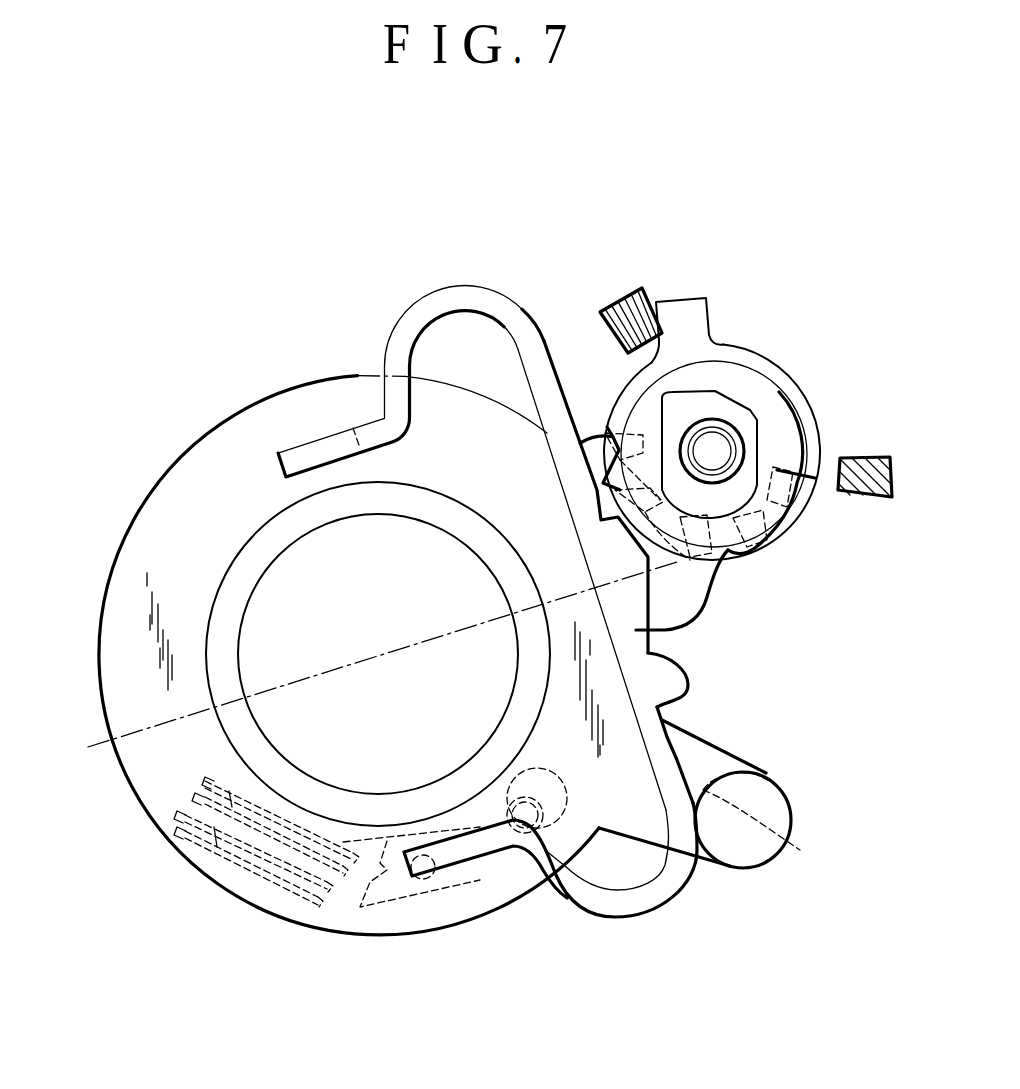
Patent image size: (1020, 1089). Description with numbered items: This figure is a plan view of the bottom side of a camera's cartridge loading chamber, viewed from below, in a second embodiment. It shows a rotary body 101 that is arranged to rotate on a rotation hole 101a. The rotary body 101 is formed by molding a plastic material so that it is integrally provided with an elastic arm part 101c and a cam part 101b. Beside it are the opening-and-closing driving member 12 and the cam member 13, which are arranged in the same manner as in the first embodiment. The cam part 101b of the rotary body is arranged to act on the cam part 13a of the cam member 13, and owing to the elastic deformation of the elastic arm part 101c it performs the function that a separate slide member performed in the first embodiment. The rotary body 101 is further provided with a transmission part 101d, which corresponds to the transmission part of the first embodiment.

The rotary body 101 is at (142, 778).
The rotation hole 101a is at (246, 618).
The cam part 101b is at (705, 597).
The elastic arm part 101c is at (440, 292).
The transmission part 101d is at (790, 847).
The opening-and-closing driving member 12 is at (743, 355).
The cam member 13 is at (770, 400).
The cam part 13a is at (702, 614).